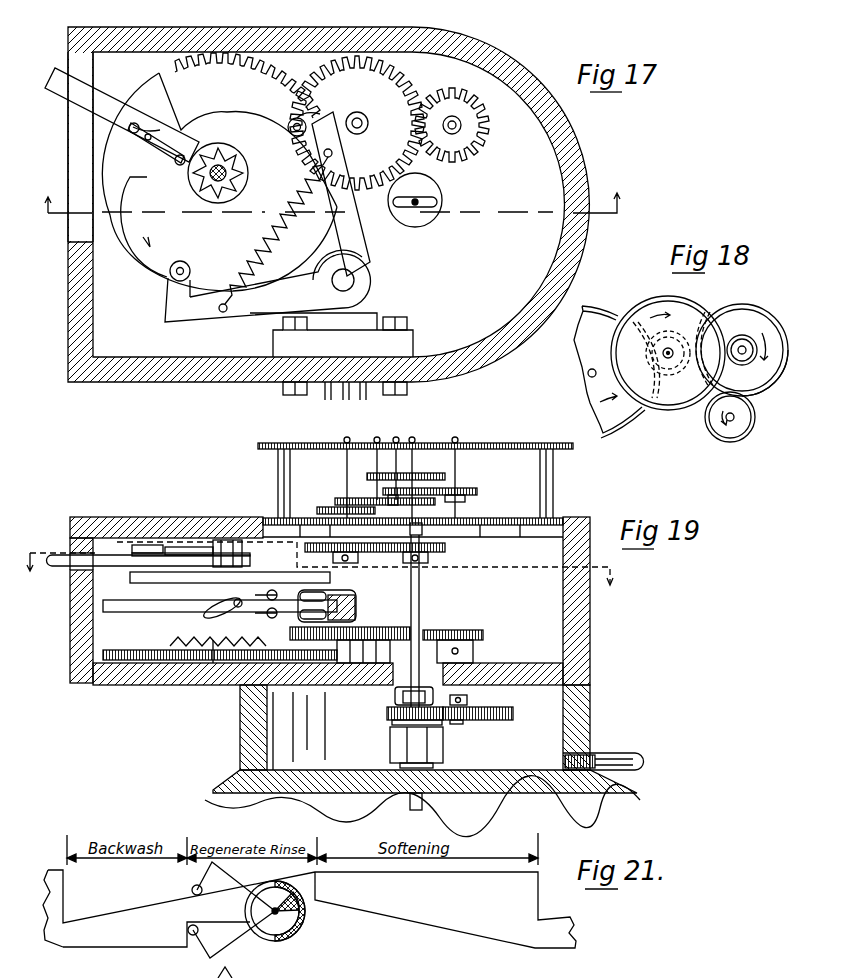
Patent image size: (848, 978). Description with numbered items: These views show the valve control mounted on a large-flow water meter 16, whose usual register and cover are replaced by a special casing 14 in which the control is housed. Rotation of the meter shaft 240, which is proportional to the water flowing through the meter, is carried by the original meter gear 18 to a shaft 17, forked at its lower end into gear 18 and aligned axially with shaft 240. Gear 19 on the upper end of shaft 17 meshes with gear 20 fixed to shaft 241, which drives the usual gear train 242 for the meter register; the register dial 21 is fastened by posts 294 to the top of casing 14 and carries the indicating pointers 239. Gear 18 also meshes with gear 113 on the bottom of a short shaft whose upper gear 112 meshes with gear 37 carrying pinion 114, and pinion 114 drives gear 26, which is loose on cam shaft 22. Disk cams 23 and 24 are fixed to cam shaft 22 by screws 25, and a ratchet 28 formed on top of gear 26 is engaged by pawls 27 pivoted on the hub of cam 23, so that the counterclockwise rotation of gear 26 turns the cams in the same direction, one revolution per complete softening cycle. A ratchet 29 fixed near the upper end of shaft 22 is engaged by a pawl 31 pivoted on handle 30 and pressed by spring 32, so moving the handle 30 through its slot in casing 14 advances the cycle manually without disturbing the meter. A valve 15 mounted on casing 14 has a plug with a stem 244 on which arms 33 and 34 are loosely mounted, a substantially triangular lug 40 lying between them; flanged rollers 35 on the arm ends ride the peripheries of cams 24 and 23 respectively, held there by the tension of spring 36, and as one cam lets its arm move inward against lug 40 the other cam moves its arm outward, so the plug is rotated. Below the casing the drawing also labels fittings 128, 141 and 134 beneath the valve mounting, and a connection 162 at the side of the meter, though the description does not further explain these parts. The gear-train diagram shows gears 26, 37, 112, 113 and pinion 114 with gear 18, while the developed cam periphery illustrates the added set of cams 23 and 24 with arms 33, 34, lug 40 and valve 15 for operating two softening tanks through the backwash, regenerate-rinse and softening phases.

In FIG. 17, the casing 14 is at (557, 264).
In FIG. 19, the casing 14 is at (573, 580).
In FIG. 17, the valve 15 is at (367, 318).
In FIG. 21, the valve 15 is at (303, 895).
In FIG. 19, the meter 16 is at (512, 772).
In FIG. 17, the shaft 17 is at (437, 200).
In FIG. 19, the shaft 17 is at (433, 594).
In FIG. 18, the gear 18 is at (741, 424).
In FIG. 19, the gear 18 is at (388, 714).
In FIG. 17, the gear 19 is at (330, 192).
In FIG. 19, the gear 19 is at (444, 548).
In FIG. 19, the gear 20 is at (381, 556).
In FIG. 19, the register dial 21 is at (518, 443).
In FIG. 17, the cam shaft 22 is at (226, 176).
In FIG. 19, the cam shaft 22 is at (240, 538).
In FIG. 17, the disk cam 23 is at (157, 86).
In FIG. 19, the disk cam 23 is at (127, 600).
In FIG. 21, the disk cam 23 is at (160, 902).
In FIG. 17, the disk cam 24 is at (147, 177).
In FIG. 19, the disk cam 24 is at (168, 583).
In FIG. 21, the disk cam 24 is at (145, 947).
In FIG. 19, the screws 25 is at (246, 598).
In FIG. 17, the gear 26 is at (262, 82).
In FIG. 18, the gear 26 is at (623, 407).
In FIG. 19, the gear 26 is at (130, 650).
In FIG. 19, the pawls 27 is at (232, 618).
In FIG. 19, the ratchet 28 is at (215, 665).
In FIG. 17, the ratchet 29 is at (198, 195).
In FIG. 19, the ratchet 29 is at (246, 548).
In FIG. 17, the handle 30 is at (60, 93).
In FIG. 19, the handle 30 is at (60, 566).
In FIG. 17, the pawl 31 is at (185, 176).
In FIG. 19, the pawl 31 is at (182, 547).
In FIG. 17, the spring 32 is at (165, 126).
In FIG. 19, the spring 32 is at (148, 545).
In FIG. 17, the arm 33 is at (250, 312).
In FIG. 21, the arm 33 is at (222, 942).
In FIG. 17, the arm 34 is at (347, 213).
In FIG. 19, the arm 34 is at (357, 600).
In FIG. 21, the arm 34 is at (227, 878).
In FIG. 17, the flanged rollers 35 is at (283, 118).
In FIG. 19, the flanged rollers 35 is at (318, 592).
In FIG. 17, the spring 36 is at (267, 241).
In FIG. 19, the spring 36 is at (218, 641).
In FIG. 17, the gear 37 is at (388, 90).
In FIG. 18, the gear 37 is at (683, 307).
In FIG. 19, the gear 37 is at (400, 632).
In FIG. 17, the lug 40 is at (353, 258).
In FIG. 21, the lug 40 is at (262, 910).
In FIG. 17, the gear 112 is at (487, 137).
In FIG. 18, the gear 112 is at (743, 343).
In FIG. 19, the gear 112 is at (485, 634).
In FIG. 18, the gear 113 is at (764, 382).
In FIG. 19, the gear 113 is at (505, 719).
In FIG. 18, the pinion 114 is at (672, 363).
In FIG. 19, the pinion 114 is at (373, 664).
In FIG. 17, the bolt 128 is at (323, 398).
In FIG. 17, the pin 134 is at (367, 400).
In FIG. 17, the pin 141 is at (331, 400).
In FIG. 19, the pipe 162 is at (635, 736).
In FIG. 19, the indicating pointers 239 is at (466, 443).
In FIG. 19, the meter shaft 240 is at (422, 809).
In FIG. 19, the shaft 241 is at (346, 477).
In FIG. 19, the gear train 242 is at (408, 473).
In FIG. 17, the stem 244 is at (357, 280).
In FIG. 19, the posts 294 is at (280, 468).